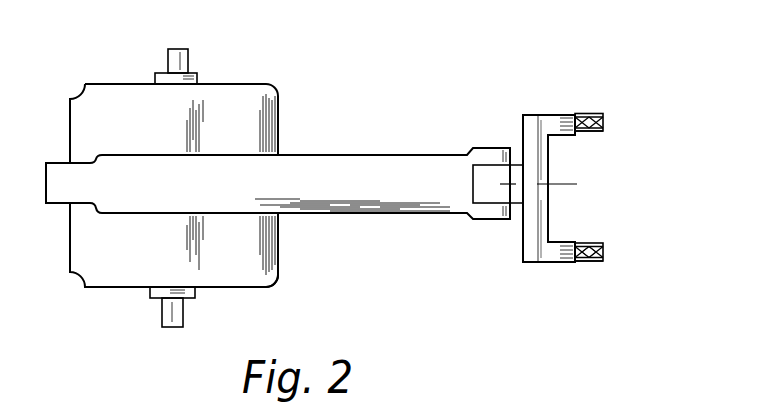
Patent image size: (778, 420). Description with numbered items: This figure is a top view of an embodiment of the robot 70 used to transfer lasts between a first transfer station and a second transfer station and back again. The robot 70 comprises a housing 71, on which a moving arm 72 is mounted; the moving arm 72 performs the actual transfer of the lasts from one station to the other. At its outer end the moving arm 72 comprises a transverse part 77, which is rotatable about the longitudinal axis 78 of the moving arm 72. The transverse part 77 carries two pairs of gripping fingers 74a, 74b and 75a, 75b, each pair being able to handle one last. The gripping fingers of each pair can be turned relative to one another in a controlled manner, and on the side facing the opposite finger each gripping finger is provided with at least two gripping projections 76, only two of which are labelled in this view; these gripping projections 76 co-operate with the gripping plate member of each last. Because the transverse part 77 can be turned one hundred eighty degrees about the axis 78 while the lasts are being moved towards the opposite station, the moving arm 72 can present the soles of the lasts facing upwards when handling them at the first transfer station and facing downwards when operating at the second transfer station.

The robot 70 is at (103, 291).
The housing 71 is at (268, 268).
The moving arm 72 is at (393, 165).
The gripping finger 74a is at (587, 114).
The gripping finger 74b is at (587, 133).
The gripping finger 75a is at (588, 243).
The gripping finger 75b is at (588, 263).
The gripping projections 76 is at (598, 253).
The transverse part 77 is at (534, 124).
The longitudinal axis 78 is at (572, 184).